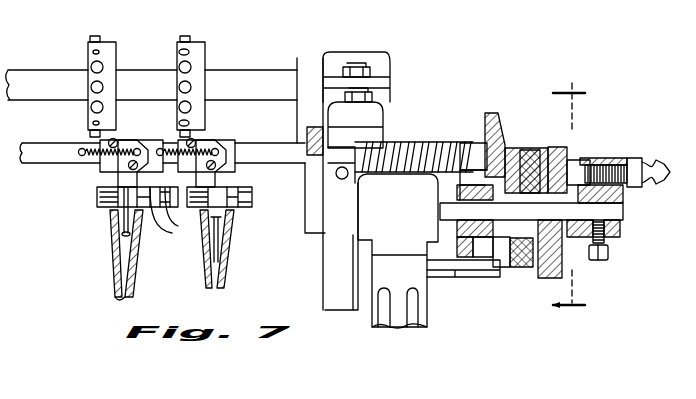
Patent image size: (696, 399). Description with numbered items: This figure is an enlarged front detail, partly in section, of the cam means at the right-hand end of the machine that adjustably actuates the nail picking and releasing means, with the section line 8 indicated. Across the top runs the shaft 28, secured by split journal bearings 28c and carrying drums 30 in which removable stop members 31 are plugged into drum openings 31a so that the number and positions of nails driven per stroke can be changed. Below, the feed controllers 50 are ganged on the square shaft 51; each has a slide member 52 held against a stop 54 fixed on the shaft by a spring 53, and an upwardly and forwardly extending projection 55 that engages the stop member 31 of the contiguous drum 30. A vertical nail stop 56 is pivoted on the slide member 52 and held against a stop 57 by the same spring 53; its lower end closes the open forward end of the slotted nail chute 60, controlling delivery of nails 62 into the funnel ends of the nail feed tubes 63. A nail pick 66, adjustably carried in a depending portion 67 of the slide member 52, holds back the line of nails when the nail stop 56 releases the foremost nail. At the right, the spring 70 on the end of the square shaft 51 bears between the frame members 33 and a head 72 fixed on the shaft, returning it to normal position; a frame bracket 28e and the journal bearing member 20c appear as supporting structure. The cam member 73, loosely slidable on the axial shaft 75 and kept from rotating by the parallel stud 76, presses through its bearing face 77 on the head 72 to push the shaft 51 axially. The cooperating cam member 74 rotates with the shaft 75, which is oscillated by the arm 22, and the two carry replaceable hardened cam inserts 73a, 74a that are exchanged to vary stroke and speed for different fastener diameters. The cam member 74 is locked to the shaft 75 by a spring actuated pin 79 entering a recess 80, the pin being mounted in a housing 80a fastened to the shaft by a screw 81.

The shaft 28 is at (45, 76).
The stop members 31 is at (106, 35).
The drum openings 31a is at (99, 50).
The drums 30 is at (176, 59).
The feed controllers 50 is at (238, 139).
The slide member 52 is at (236, 135).
The square shaft 51 is at (282, 162).
The projection 55 is at (180, 139).
The stop 57 is at (118, 142).
The stop 54 is at (85, 157).
The spring 53 is at (100, 170).
The nail stop 56 is at (112, 184).
The nail chute 60 is at (103, 208).
The nails 62 is at (113, 239).
The nail feed tubes 63 is at (115, 281).
The nail pick 66 is at (131, 228).
The depending portion 67 is at (170, 231).
The arm 22 is at (313, 192).
The split journal bearings 28c is at (365, 53).
The frame members 33 is at (343, 142).
The frame bracket 28e is at (328, 263).
The spring 70 is at (409, 143).
The journal bearing member 20c is at (410, 221).
The stud 76 is at (452, 270).
The axial shaft 75 is at (600, 211).
The head 72 is at (470, 148).
The bearing face 77 is at (487, 121).
The cam member 73 is at (508, 148).
The cam insert 73a is at (530, 150).
The cam member 74 is at (553, 148).
The cam insert 74a is at (538, 148).
The spring actuated pin 79 is at (577, 168).
The recess 80 is at (600, 168).
The housing 80a is at (622, 193).
The screw 81 is at (604, 257).
The section line 8- 8 is at (575, 201).